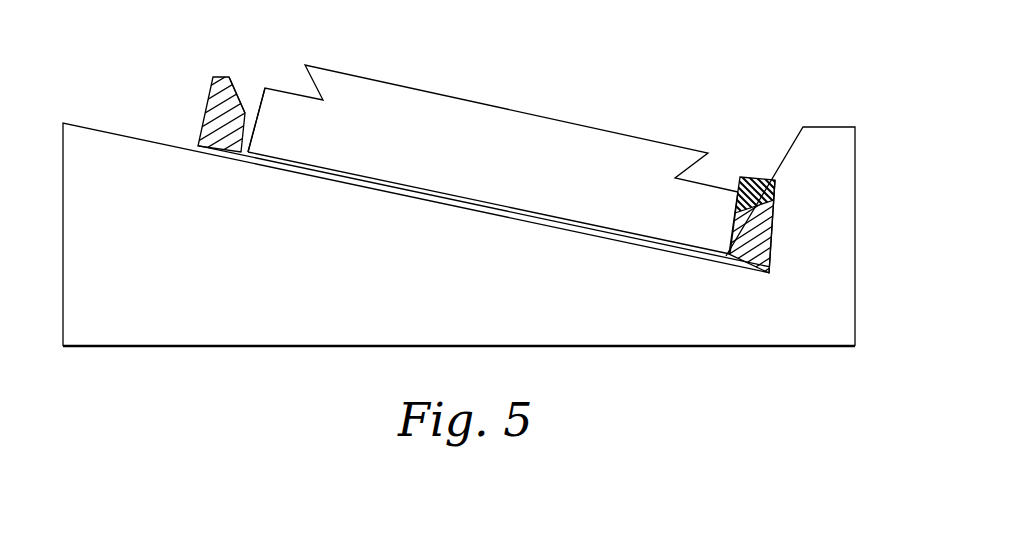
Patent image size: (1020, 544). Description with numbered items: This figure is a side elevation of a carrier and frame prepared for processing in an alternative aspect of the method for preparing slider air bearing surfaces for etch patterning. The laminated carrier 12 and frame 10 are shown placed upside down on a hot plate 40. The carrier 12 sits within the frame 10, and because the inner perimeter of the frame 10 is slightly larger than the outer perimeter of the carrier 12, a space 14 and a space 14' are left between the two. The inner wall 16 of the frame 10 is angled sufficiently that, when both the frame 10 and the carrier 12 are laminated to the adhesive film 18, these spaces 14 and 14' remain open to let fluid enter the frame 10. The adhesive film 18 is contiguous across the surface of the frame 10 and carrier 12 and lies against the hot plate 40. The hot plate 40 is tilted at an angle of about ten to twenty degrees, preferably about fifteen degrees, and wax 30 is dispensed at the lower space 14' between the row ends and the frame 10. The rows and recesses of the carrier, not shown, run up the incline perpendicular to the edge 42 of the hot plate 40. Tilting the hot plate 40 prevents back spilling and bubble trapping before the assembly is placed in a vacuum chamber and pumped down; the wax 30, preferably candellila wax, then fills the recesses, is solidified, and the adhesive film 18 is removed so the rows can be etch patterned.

The frame 10 is at (217, 112).
The carrier 12 is at (582, 134).
The space 14 is at (264, 83).
The space 14' is at (762, 297).
The inner wall 16 is at (234, 90).
The adhesive film 18 is at (198, 148).
The wax 30 is at (747, 175).
The hot plate 40 is at (110, 332).
The edge of hot plate 42 is at (822, 247).